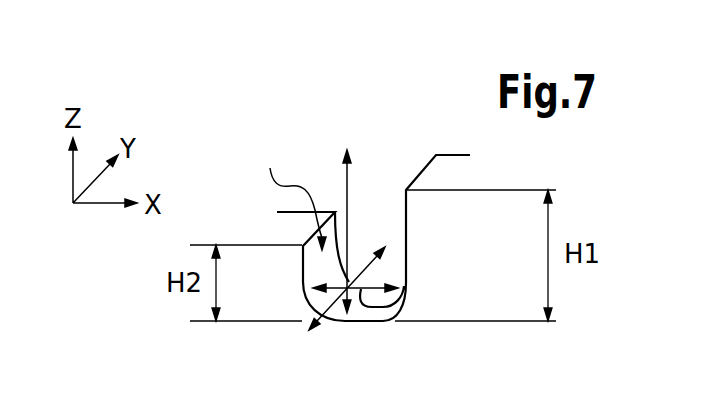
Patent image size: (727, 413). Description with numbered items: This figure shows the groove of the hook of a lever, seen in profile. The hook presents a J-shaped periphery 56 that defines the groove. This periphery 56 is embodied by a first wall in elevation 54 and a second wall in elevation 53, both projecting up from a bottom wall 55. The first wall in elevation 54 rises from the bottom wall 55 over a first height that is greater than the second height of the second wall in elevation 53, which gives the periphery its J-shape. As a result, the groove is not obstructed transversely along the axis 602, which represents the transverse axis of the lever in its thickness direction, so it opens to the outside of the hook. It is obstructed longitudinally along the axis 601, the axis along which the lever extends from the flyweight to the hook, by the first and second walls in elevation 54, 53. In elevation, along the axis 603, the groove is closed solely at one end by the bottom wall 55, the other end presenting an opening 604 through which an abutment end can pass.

The second wall in elevation 53 is at (302, 262).
The first wall in elevation 54 is at (406, 233).
The bottom wall 55 is at (352, 322).
The J-shaped periphery 56 is at (309, 303).
The axis 601 is at (394, 311).
The axis 602 is at (364, 270).
The axis 603 is at (349, 178).
The opening 604 is at (283, 191).